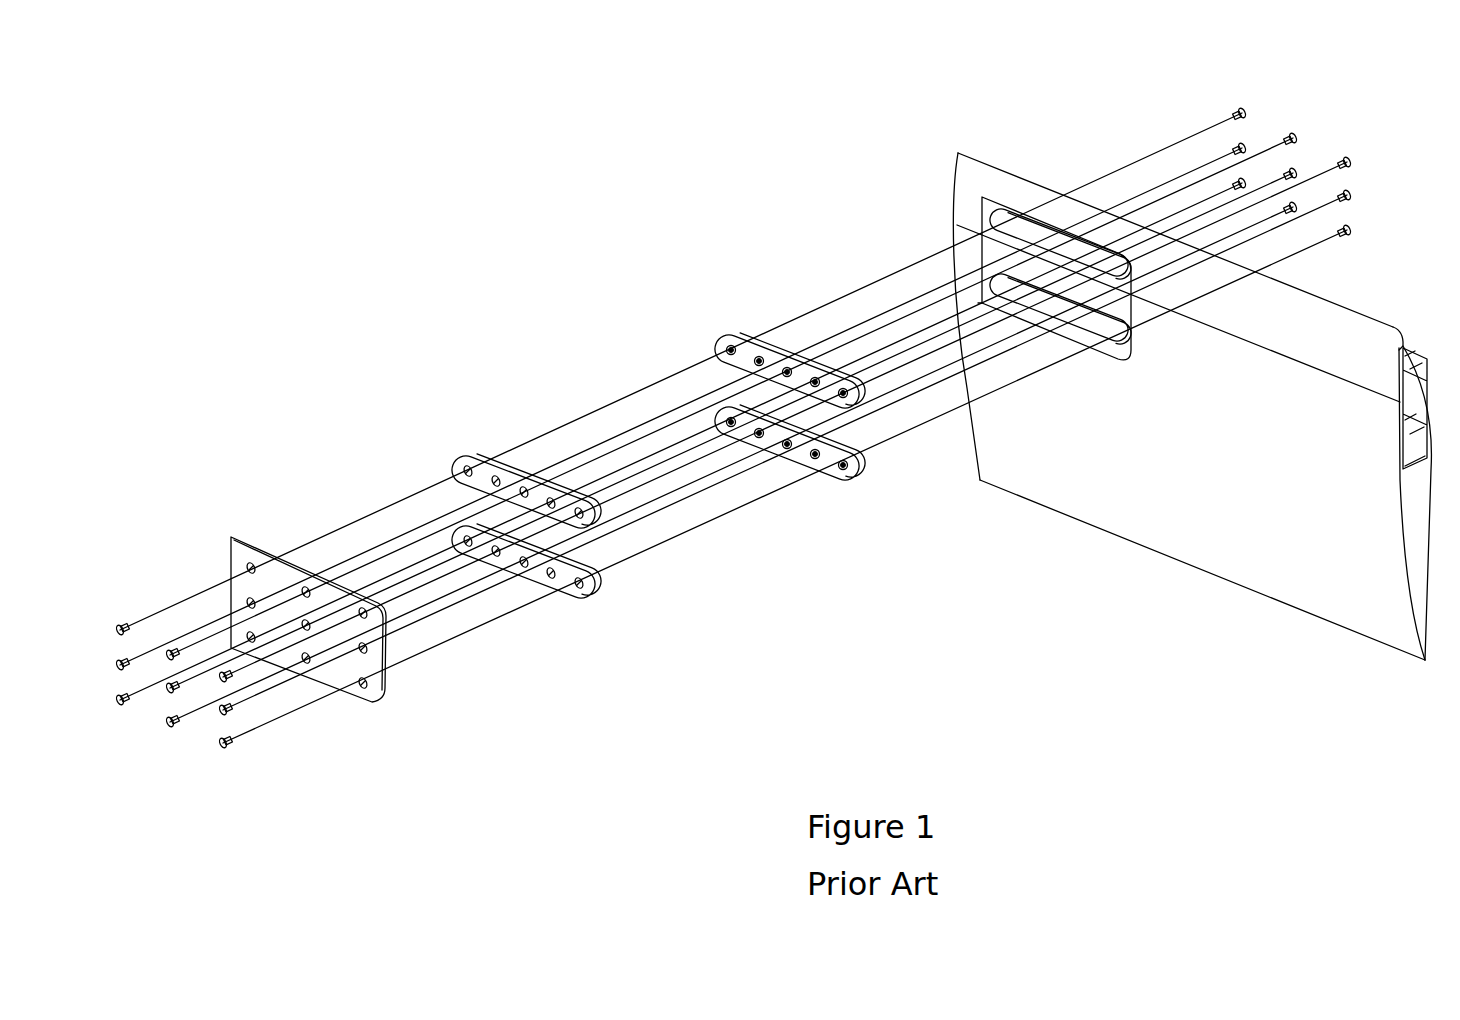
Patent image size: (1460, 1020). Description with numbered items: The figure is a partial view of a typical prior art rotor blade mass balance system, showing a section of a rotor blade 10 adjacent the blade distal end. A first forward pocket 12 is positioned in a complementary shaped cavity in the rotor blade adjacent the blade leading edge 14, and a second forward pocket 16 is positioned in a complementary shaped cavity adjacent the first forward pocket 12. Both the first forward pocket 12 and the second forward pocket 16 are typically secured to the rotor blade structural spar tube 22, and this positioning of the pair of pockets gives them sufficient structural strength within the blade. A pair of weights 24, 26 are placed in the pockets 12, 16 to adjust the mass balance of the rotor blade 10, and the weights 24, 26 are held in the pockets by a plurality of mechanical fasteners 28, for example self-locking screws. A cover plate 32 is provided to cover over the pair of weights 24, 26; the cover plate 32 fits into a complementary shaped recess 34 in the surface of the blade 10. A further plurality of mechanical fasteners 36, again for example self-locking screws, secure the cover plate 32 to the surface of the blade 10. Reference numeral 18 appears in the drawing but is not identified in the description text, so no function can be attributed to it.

The rotor blade 10 is at (1200, 528).
The first forward pocket 12 is at (738, 334).
The blade leading edge 14 is at (997, 167).
The second forward pocket 16 is at (861, 470).
The lower skin edge 18 is at (1025, 500).
The rotor blade structural spar tube 22 is at (1420, 389).
The weight 24 is at (474, 456).
The weight 26 is at (597, 592).
The mechanical fasteners 28 is at (1277, 122).
The cover plate 32 is at (377, 702).
The recess 34 is at (990, 262).
The mechanical fasteners 36 is at (152, 766).